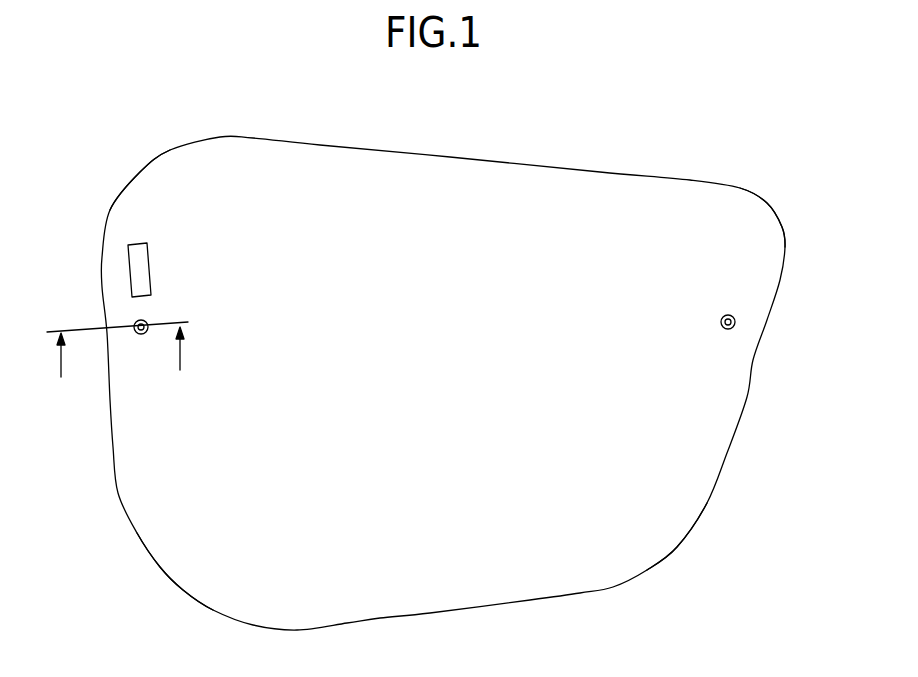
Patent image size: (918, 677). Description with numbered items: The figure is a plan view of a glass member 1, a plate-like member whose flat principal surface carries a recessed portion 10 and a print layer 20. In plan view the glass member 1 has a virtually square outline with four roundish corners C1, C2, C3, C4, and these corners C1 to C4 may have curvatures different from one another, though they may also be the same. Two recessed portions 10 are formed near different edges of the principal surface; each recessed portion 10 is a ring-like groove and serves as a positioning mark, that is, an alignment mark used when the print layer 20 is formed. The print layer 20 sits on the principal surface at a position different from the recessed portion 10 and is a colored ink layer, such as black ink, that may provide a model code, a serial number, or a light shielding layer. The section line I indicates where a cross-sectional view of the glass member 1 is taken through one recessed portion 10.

The glass member 1 is at (634, 149).
The recessed portion 10 is at (134, 323).
The print layer 20 is at (128, 270).
The roundish corner C1 is at (140, 175).
The roundish corner C2 is at (770, 208).
The roundish corner C3 is at (667, 553).
The roundish corner C4 is at (182, 590).
The line I- I is at (117, 362).